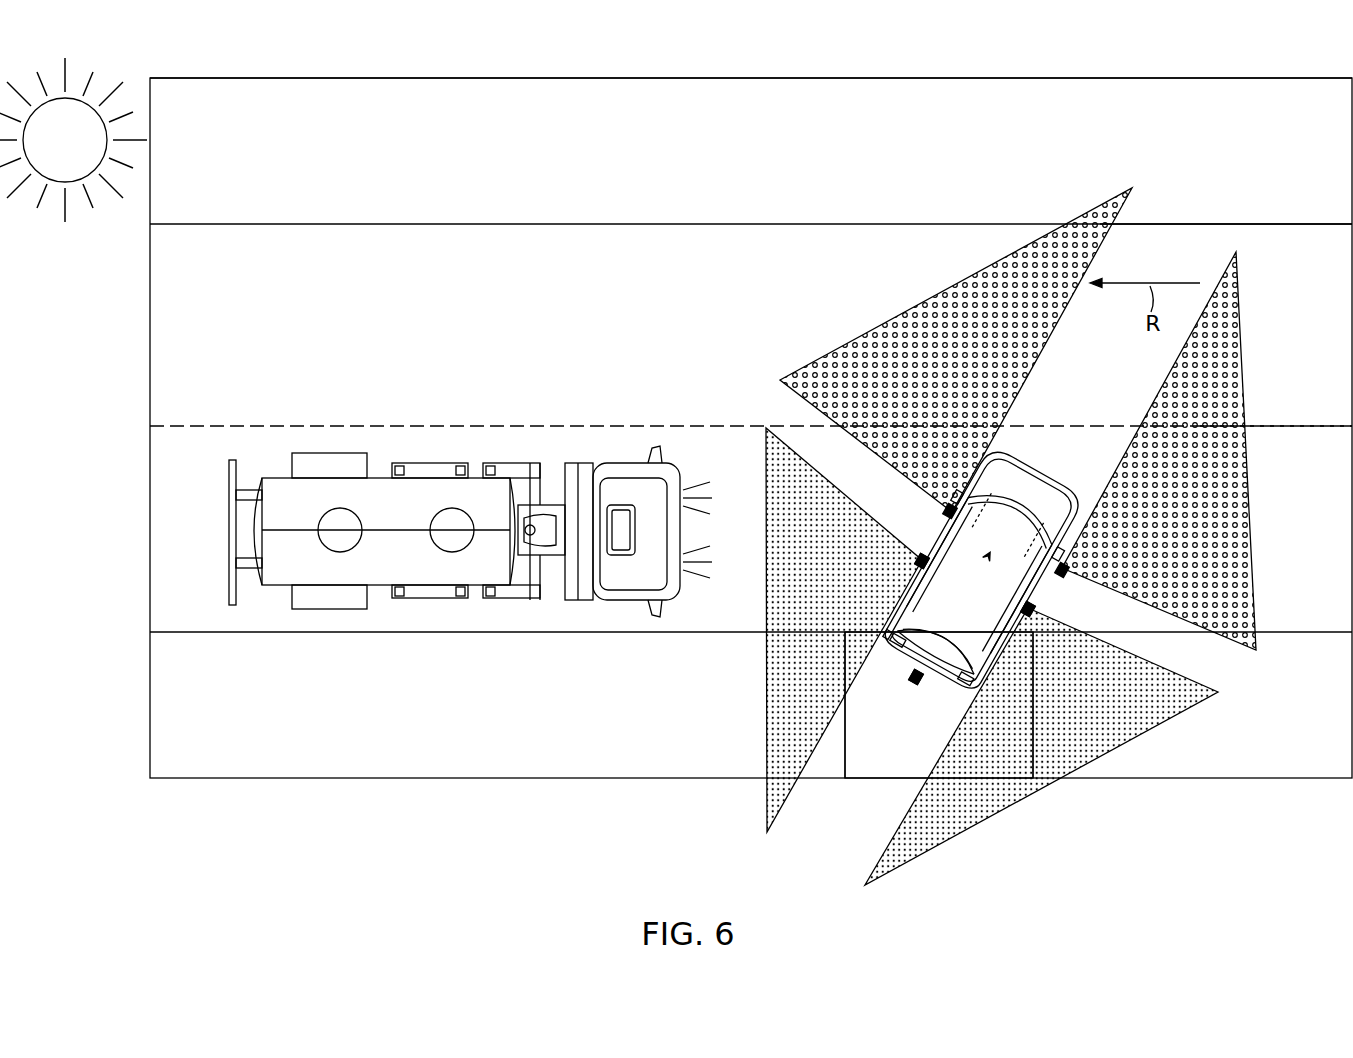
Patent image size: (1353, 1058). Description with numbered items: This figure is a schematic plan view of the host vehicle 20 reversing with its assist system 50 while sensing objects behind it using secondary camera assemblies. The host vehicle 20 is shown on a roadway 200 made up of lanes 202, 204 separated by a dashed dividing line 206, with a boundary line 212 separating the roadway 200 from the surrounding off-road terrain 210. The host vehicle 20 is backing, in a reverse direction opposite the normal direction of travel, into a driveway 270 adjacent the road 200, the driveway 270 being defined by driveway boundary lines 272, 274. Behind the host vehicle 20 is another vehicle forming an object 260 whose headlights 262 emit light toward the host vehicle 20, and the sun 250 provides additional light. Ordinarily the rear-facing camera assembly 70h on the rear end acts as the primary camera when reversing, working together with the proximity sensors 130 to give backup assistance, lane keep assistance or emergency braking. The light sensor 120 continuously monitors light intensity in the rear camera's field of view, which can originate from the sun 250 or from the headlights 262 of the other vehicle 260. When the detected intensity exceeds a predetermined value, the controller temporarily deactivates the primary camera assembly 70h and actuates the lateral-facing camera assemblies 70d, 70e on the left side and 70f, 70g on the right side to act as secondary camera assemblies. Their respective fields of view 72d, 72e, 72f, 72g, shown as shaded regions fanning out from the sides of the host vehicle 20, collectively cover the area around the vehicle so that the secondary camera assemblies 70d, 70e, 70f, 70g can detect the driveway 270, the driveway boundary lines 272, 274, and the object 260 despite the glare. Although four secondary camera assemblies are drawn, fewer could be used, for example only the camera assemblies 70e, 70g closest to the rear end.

The sun 250 is at (46, 152).
The off-road terrain 210 is at (731, 166).
The roadway 200 is at (751, 145).
The boundary line 212 is at (1267, 223).
The field of view 72d is at (940, 318).
The lane 202 is at (1253, 333).
The dashed dividing line 206 is at (708, 425).
The assist system 50 is at (991, 517).
The host vehicle 20 is at (1035, 480).
The object 260 is at (390, 490).
The camera assembly 70d is at (912, 505).
The lane 204 is at (1286, 518).
The field of view 72f is at (1226, 545).
The camera assembly 70e is at (868, 554).
The light sensor 120 is at (975, 584).
The camera assembly 70f is at (1096, 573).
The headlights 262 is at (700, 566).
The camera assembly 70g is at (1086, 612).
The field of view 72e is at (790, 706).
The camera assembly 70h is at (908, 704).
The proximity sensor 130 is at (916, 676).
The driveway 270 is at (863, 771).
The field of view 72g is at (1128, 718).
The driveway boundary line 272 is at (850, 764).
The driveway boundary line 274 is at (1035, 757).